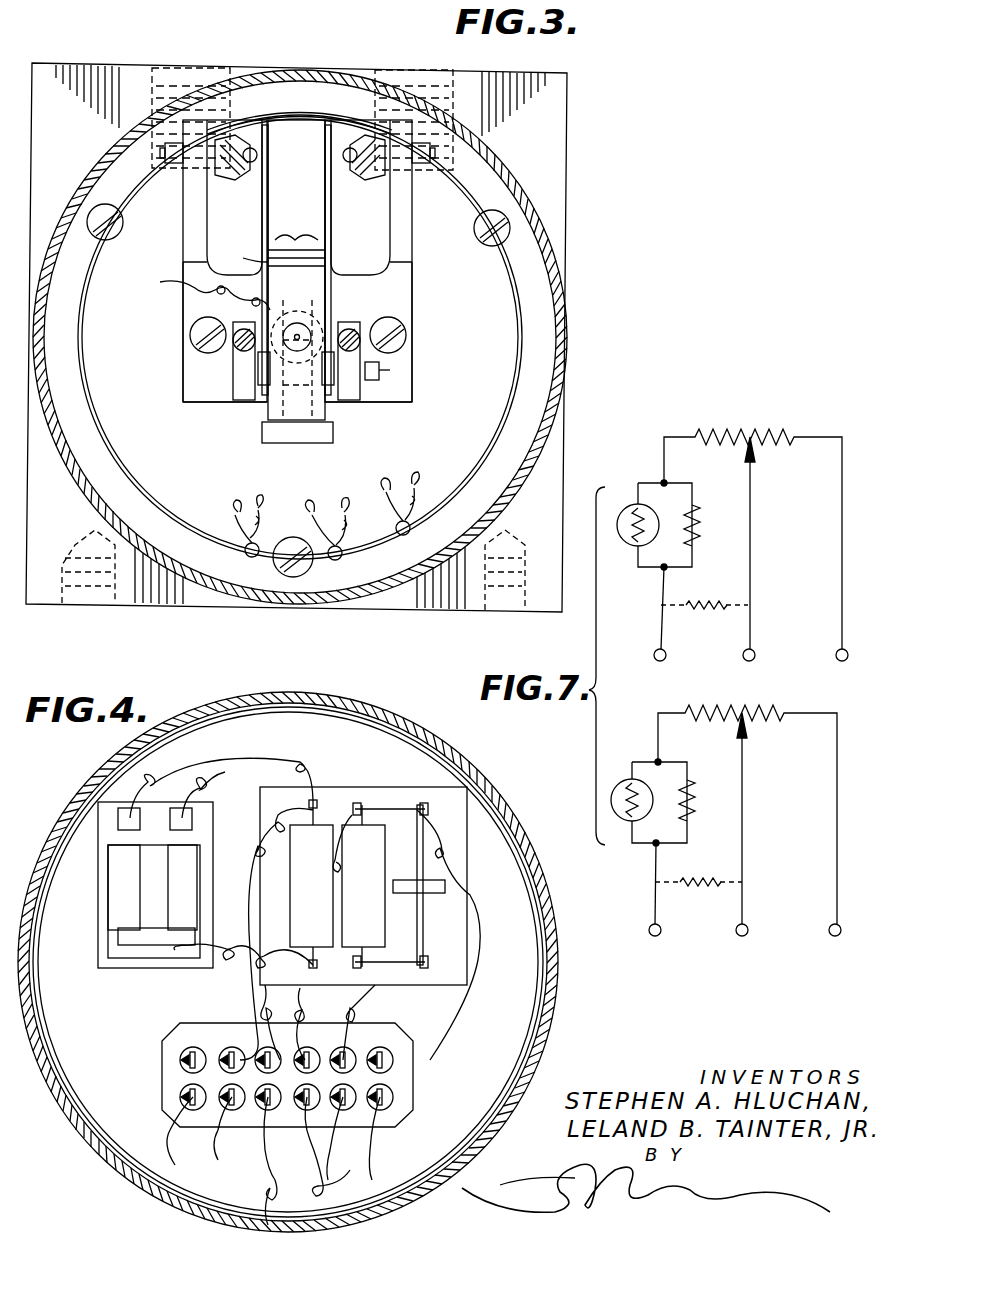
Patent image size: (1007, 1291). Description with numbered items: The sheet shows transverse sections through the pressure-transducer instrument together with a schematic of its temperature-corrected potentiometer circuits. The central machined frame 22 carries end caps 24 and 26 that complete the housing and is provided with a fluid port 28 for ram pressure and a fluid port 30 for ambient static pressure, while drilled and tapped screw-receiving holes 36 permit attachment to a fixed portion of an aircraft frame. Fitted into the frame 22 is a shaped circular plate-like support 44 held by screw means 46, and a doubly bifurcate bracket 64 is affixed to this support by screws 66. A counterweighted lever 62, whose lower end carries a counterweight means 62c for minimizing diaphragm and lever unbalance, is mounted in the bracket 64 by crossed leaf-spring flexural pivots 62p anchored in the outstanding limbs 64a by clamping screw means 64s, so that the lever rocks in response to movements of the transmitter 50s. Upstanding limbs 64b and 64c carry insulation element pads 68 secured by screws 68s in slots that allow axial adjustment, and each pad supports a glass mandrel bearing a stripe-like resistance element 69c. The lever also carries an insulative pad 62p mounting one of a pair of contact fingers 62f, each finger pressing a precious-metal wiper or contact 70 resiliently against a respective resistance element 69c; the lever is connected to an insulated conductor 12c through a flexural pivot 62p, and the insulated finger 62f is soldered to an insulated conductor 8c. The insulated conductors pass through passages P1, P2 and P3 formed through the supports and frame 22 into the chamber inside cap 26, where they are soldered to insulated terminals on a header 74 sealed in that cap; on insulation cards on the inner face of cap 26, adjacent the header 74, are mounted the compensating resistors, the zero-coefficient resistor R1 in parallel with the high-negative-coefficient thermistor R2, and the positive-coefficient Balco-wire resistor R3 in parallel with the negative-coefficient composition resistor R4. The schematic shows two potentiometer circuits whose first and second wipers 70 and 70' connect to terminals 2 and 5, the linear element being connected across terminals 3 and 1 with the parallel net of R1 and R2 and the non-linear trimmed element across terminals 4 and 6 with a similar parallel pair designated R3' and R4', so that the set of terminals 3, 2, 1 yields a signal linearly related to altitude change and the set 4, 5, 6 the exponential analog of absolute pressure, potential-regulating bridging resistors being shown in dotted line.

In FIG. 3, the frame 22 is at (553, 116).
In FIG. 3, the end cap 24 is at (520, 203).
In FIG. 4, the end cap 26 is at (434, 744).
In FIG. 3, the fluid port 28 is at (165, 80).
In FIG. 3, the fluid port 30 is at (385, 80).
In FIG. 3, the screw-receiving hole 36 is at (70, 606).
In FIG. 3, the plate-like support 44 is at (447, 470).
In FIG. 3, the screw means 46 is at (500, 233).
In FIG. 3, the insulated conductor 8c is at (202, 289).
In FIG. 3, the insulated conductor 12c is at (380, 395).
In FIG. 3, the transmitter 50s is at (300, 337).
In FIG. 3, the counterweighted lever 62 is at (268, 420).
In FIG. 3, the counterweight means 62c is at (287, 445).
In FIG. 3, the contact finger 62f is at (297, 228).
In FIG. 3, the flexural pivot 62p is at (262, 262).
In FIG. 3, the doubly bifurcate bracket 64 is at (320, 170).
In FIG. 3, the outstanding limb 64a is at (232, 392).
In FIG. 3, the upstanding limb 64b is at (190, 232).
In FIG. 3, the upstanding limb 64c is at (398, 250).
In FIG. 3, the clamping screw means 64s is at (238, 345).
In FIG. 3, the screws 66 is at (192, 333).
In FIG. 3, the insulation element pad 68 is at (240, 185).
In FIG. 3, the screws 68s is at (165, 150).
In FIG. 3, the resistance element 69c is at (318, 140).
In FIG. 3, the wiper or contact 70 is at (296, 260).
In FIG. 7, the wiper or contact 70 is at (747, 814).
In FIG. 7, the second wiper or contact 70' is at (753, 539).
In FIG. 4, the header 74 is at (172, 1045).
In FIG. 3, the passage P1 is at (245, 553).
In FIG. 3, the passage P2 is at (311, 529).
In FIG. 3, the passage P3 is at (400, 537).
In FIG. 7, the resistor R1 is at (645, 802).
In FIG. 4, the resistor R1 is at (372, 853).
In FIG. 7, the thermistor resistor R2 is at (700, 800).
In FIG. 4, the thermistor resistor R2 is at (431, 892).
In FIG. 4, the resistor R3 is at (294, 884).
In FIG. 4, the resistor R4 is at (135, 885).
In FIG. 7, the photoresistor R3' is at (654, 525).
In FIG. 7, the resistor R4' is at (706, 525).
In FIG. 7, the terminal 1 is at (825, 930).
In FIG. 7, the terminal 2 is at (729, 930).
In FIG. 7, the terminal 3 is at (641, 930).
In FIG. 7, the terminal 4 is at (829, 658).
In FIG. 7, the terminal 5 is at (737, 655).
In FIG. 7, the terminal 6 is at (648, 655).